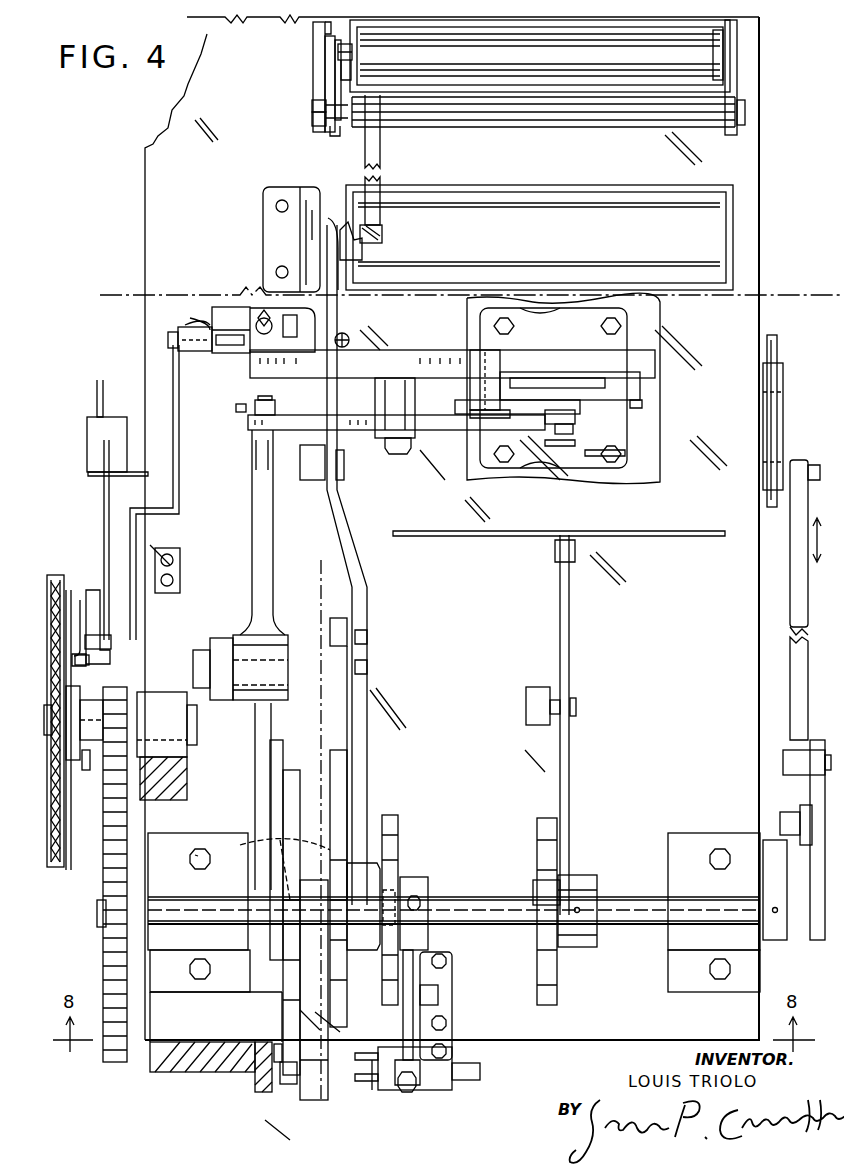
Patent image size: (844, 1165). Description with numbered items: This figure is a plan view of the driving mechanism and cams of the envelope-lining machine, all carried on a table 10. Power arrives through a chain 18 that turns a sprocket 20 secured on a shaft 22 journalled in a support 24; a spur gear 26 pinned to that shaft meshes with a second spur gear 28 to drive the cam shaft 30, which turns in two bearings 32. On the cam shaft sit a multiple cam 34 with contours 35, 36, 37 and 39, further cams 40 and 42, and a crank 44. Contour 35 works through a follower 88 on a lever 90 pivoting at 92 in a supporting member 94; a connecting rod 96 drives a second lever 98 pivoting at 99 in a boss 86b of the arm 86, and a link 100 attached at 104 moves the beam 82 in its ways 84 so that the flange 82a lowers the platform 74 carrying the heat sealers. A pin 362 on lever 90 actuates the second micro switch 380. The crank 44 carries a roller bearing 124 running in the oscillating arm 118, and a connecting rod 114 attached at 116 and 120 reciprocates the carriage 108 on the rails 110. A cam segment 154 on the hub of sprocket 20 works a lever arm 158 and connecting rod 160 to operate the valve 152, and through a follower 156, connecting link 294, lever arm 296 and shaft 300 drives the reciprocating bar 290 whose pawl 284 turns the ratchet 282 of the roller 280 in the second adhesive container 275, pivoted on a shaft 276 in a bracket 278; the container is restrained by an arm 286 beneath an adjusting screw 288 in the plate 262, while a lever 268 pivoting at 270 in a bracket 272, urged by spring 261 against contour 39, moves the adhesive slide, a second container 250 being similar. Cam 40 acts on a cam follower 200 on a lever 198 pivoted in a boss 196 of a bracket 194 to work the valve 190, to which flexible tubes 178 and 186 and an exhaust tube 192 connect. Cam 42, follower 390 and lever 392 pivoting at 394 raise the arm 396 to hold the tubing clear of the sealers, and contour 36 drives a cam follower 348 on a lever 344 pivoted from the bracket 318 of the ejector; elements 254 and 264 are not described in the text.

The table 10 is at (208, 223).
The chain 18 is at (66, 592).
The sprocket 20 is at (52, 576).
The shaft 22 is at (90, 716).
The support 24 is at (195, 728).
The spur gear 26 is at (90, 660).
The second spur gear 28 is at (128, 824).
The cam shaft 30 is at (58, 902).
The bearings 32 is at (693, 877).
The multiple cam 34 is at (310, 1118).
The cam surface 35 is at (283, 972).
The cam 36 is at (285, 945).
The cam contour 37 is at (300, 860).
The cam 39 is at (335, 965).
The cam 40 is at (400, 835).
The cam 42 is at (537, 827).
The crank 44 is at (780, 940).
The platform 74 is at (660, 360).
The beam 82 is at (575, 410).
The flange 82a is at (625, 455).
The ways 84 is at (498, 380).
The arm 86 is at (385, 374).
The boss 86b is at (388, 402).
The follower 88 is at (211, 861).
The lever 90 is at (265, 493).
The pivot 92 is at (222, 645).
The supporting member 94 is at (240, 640).
The connecting rod 96 is at (265, 403).
The second lever 98 is at (302, 418).
The pivot point 99 is at (397, 450).
The link 100 is at (575, 392).
The pivot 104 is at (555, 445).
The carriage 108 is at (783, 378).
The rails 110 is at (778, 340).
The connecting rod 114 is at (795, 565).
The attachment point 116 is at (820, 470).
The oscillating arm 118 is at (810, 935).
The attachment point 120 is at (783, 760).
The roller bearing 124 is at (780, 822).
The valve 152 is at (92, 440).
The cam segment 154 is at (82, 765).
The follower 156 is at (80, 600).
The lever arm 158 is at (105, 620).
The connecting rod 160 is at (100, 493).
The flexible tube 178 is at (348, 1080).
The second flexible tube 186 is at (372, 1090).
The valve 190 is at (440, 1090).
The exhaust tube 192 is at (475, 1082).
The bracket 194 is at (450, 1008).
The boss 196 is at (440, 988).
The lever 198 is at (415, 975).
The cam follower 200 is at (395, 880).
The adhesive container 250 is at (735, 222).
The bracket 254 is at (265, 240).
The spring 261 is at (345, 330).
The plate 262 is at (372, 228).
The rails 264 is at (576, 264).
The lever 268 is at (368, 792).
The pivot 270 is at (325, 470).
The bracket 272 is at (318, 480).
The second adhesive container 275 is at (735, 78).
The shaft 276 is at (540, 115).
The bracket 278 is at (331, 135).
The roller 280 is at (524, 61).
The ratchet 282 is at (352, 52).
The pawl 284 is at (318, 42).
The arm 286 is at (382, 145).
The adjusting screw 288 is at (380, 245).
The reciprocating bar 290 is at (320, 68).
The connecting link 294 is at (175, 440).
The lever arm 296 is at (210, 326).
The shaft 300 is at (168, 340).
The bracket 318 is at (195, 1070).
The lever 344 is at (263, 1092).
The cam follower 348 is at (290, 1086).
The pin 362 is at (240, 405).
The second micro switch 380 is at (225, 350).
The follower 390 is at (542, 890).
The lever 392 is at (572, 748).
The pivot 394 is at (577, 705).
The arm 396 is at (482, 537).